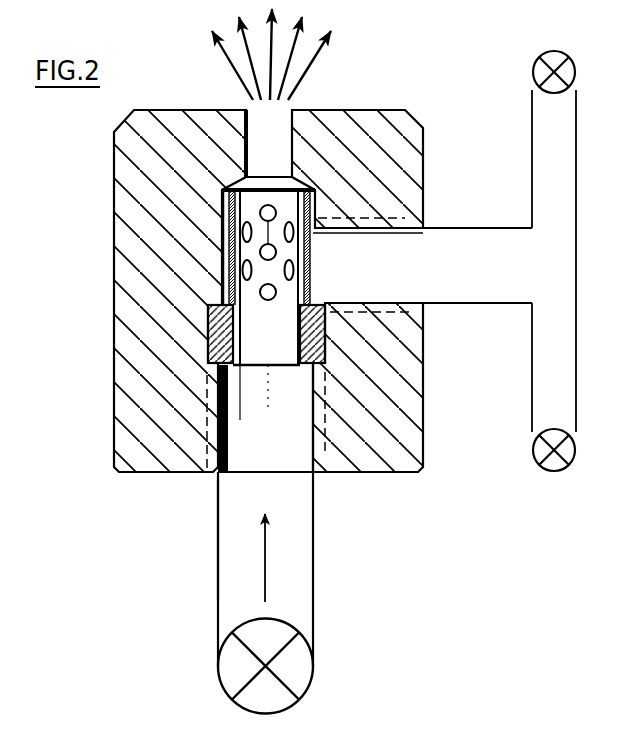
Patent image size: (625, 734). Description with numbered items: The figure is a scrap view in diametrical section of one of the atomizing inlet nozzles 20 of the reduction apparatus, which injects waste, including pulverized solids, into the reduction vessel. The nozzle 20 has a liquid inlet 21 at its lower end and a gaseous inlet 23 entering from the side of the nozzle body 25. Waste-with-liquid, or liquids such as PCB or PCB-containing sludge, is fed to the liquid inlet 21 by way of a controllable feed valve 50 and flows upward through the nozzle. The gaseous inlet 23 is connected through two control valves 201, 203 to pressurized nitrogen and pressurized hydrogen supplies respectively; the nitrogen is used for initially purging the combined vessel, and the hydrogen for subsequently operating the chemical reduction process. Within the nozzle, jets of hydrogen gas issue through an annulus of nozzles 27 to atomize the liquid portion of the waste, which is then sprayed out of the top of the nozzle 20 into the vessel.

The inlet nozzle 20 is at (424, 528).
The liquid inlet 21 is at (318, 456).
The gaseous inlet 23 is at (305, 237).
The nozzle body block 25 is at (423, 128).
The annulus of nozzles 27 is at (305, 248).
The controllable feed valve 50 is at (313, 672).
The control valve 201 is at (533, 72).
The control valve 203 is at (533, 452).